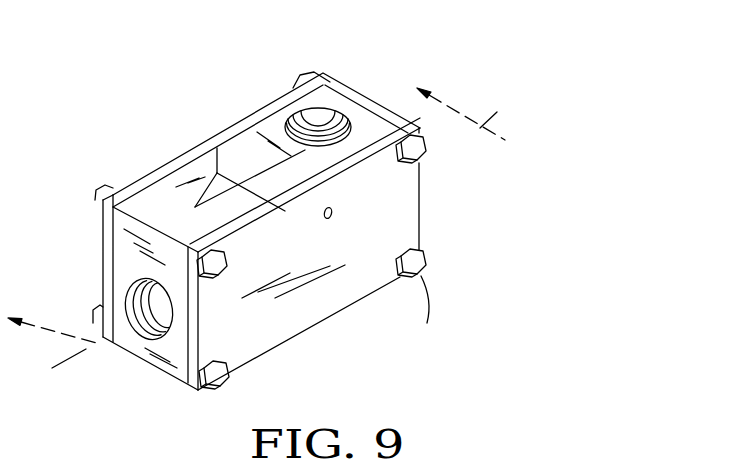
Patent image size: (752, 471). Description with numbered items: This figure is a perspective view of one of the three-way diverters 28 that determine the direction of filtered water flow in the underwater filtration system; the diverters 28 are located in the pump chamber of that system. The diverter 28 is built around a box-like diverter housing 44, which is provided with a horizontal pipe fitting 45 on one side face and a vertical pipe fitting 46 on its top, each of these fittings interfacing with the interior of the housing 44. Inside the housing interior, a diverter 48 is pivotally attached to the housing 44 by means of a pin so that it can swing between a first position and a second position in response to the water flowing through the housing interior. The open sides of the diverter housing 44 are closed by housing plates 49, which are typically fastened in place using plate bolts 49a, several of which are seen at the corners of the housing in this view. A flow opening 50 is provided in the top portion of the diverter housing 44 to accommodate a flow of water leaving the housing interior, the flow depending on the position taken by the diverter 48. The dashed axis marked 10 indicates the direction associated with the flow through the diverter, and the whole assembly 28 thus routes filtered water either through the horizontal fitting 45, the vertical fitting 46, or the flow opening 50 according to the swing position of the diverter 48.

The flow axis / direction of flow 10 is at (275, 239).
The three-way diverter 28 is at (226, 103).
The diverter housing 44 is at (228, 138).
The horizontal pipe fitting 45 is at (150, 312).
The vertical pipe fitting 46 is at (333, 127).
The diverter 48 is at (230, 198).
The housing plates 49 is at (263, 110).
The plate bolts 49a is at (235, 383).
The flow opening 50 is at (242, 183).